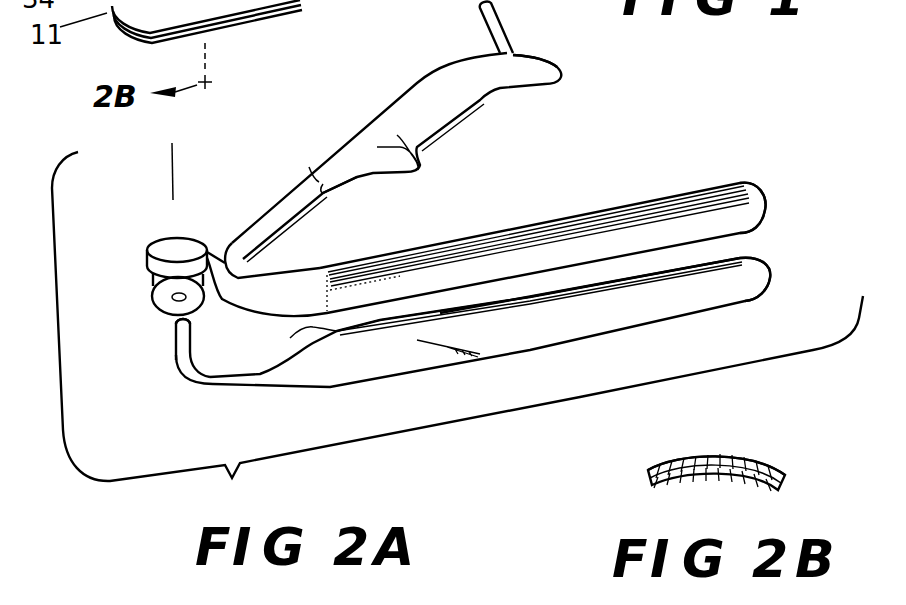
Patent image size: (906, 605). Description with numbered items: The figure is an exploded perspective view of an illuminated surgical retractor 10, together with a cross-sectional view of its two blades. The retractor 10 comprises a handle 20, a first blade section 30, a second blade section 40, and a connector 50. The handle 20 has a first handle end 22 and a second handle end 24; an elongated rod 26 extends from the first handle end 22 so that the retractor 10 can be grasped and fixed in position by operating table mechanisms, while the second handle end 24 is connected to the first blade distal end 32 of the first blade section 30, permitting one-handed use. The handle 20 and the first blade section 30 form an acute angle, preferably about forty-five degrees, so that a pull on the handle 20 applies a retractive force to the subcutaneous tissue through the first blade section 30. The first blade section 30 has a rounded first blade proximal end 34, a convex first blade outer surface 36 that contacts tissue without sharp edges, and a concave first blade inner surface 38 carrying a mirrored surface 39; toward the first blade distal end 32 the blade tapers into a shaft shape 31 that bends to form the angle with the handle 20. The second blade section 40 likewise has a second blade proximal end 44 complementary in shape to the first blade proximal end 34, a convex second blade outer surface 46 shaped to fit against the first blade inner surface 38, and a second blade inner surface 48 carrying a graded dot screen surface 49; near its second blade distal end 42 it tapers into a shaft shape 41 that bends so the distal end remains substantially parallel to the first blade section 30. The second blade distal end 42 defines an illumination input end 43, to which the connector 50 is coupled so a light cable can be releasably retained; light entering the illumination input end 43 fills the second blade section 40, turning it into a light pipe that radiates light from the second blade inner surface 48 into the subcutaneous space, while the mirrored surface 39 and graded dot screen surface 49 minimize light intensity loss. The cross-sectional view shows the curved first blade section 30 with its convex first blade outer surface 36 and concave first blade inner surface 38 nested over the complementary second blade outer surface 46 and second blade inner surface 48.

In FIG. 2A, the illuminated surgical retractor 10 is at (447, 113).
In FIG. 2A, the handle 20 is at (418, 98).
In FIG. 2A, the first handle end 22 is at (515, 53).
In FIG. 2A, the second handle end 24 is at (313, 174).
In FIG. 2A, the elongated rod 26 is at (495, 21).
In FIG. 2A, the first blade section 30 is at (520, 223).
In FIG. 2A, the shaft shape 31 is at (256, 263).
In FIG. 2A, the first blade distal end 32 is at (325, 195).
In FIG. 2A, the first blade proximal end 34 is at (760, 192).
In FIG. 2A, the first blade outer surface 36 is at (603, 208).
In FIG. 2B, the first blade outer surface 36 is at (695, 458).
In FIG. 2A, the first blade inner surface 38 is at (683, 227).
In FIG. 2B, the first blade inner surface 38 is at (760, 465).
In FIG. 2A, the mirrored surface 39 is at (473, 271).
In FIG. 2A, the second blade section 40 is at (510, 330).
In FIG. 2A, the shaft shape 41 is at (188, 380).
In FIG. 2A, the second blade distal end 42 is at (160, 328).
In FIG. 2A, the illumination input end 43 is at (172, 312).
In FIG. 2A, the second blade proximal end 44 is at (757, 273).
In FIG. 2A, the second blade outer surface 46 is at (306, 333).
In FIG. 2B, the second blade outer surface 46 is at (678, 484).
In FIG. 2A, the second blade inner surface 48 is at (615, 313).
In FIG. 2B, the second blade inner surface 48 is at (740, 482).
In FIG. 2A, the graded dot screen surface 49 is at (553, 328).
In FIG. 2A, the connector 50 is at (158, 240).